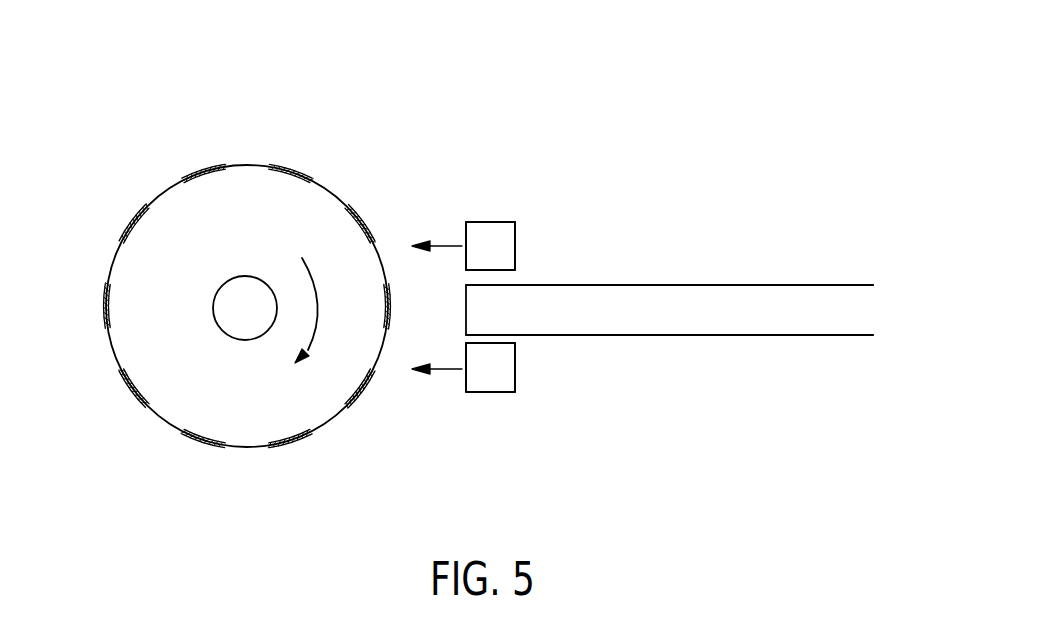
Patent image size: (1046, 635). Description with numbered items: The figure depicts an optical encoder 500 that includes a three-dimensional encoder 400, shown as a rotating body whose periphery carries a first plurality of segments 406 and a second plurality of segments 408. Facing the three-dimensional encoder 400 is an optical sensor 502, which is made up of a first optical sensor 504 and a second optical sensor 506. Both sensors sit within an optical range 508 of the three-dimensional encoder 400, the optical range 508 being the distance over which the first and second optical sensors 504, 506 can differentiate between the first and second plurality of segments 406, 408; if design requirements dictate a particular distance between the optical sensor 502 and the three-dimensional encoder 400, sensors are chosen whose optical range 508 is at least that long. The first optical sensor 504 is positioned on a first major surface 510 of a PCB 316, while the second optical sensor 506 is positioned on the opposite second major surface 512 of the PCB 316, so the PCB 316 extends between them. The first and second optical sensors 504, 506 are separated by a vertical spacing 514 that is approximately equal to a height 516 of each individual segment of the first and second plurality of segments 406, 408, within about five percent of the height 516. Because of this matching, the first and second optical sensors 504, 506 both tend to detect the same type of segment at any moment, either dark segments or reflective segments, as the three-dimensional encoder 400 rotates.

The PCB 316 is at (687, 302).
The three-dimensional encoder 400 is at (180, 202).
The first plurality of segments 406 is at (128, 390).
The second plurality of segments 408 is at (238, 447).
The optical encoder 500 is at (510, 113).
The optical sensor 502 is at (548, 436).
The first optical sensor 504 is at (500, 235).
The second optical sensor 506 is at (517, 362).
The optical range 508 is at (460, 244).
The first major surface 510 is at (793, 283).
The second major surface 512 is at (818, 335).
The vertical spacing 514 is at (473, 246).
The height 516 is at (73, 205).